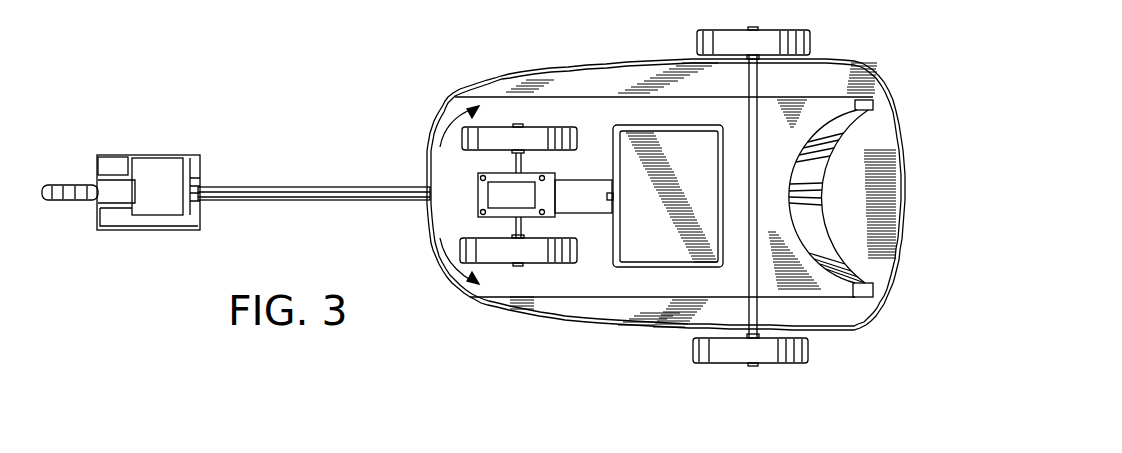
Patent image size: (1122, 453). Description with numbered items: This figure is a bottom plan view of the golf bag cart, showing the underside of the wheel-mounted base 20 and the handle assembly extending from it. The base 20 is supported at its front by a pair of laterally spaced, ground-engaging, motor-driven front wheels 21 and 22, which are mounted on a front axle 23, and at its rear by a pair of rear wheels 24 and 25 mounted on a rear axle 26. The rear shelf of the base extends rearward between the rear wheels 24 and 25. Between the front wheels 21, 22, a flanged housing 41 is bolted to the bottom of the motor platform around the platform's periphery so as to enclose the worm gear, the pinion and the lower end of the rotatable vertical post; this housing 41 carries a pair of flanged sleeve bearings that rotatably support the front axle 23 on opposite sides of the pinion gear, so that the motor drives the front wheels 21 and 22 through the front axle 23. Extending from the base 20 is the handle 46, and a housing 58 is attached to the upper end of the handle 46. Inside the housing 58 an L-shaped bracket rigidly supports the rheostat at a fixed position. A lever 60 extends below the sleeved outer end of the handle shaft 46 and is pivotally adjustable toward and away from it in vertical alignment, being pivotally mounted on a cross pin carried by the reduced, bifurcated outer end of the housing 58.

The wheel-mounted base 20 is at (545, 333).
The front wheel 21 is at (543, 132).
The front wheel 22 is at (542, 262).
The front axle 23 is at (524, 228).
The rear wheel 24 is at (812, 42).
The rear wheel 25 is at (780, 363).
The rear axle 26 is at (757, 180).
The flanged housing 41 is at (492, 197).
The handle 46 is at (325, 197).
The housing 58 is at (155, 207).
The lever 60 is at (68, 202).